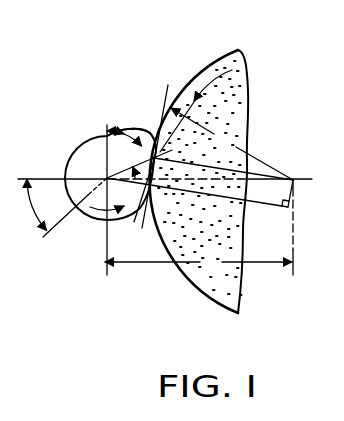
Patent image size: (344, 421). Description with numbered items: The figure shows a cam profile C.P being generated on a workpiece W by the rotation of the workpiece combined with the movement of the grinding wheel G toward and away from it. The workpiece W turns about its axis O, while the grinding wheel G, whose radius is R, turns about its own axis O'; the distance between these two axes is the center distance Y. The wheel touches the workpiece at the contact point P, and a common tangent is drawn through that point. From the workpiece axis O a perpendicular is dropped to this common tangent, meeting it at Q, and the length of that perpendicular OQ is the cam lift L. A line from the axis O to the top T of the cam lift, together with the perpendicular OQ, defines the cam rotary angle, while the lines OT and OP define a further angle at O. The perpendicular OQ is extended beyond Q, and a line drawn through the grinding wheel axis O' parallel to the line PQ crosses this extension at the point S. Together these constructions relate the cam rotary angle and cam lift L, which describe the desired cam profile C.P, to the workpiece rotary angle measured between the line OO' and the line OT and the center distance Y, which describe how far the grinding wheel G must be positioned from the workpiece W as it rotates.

The grinding wheel G is at (239, 58).
The workpiece W is at (79, 150).
The cam profile C.P is at (113, 131).
The axis of the workpiece O is at (165, 200).
The axis of the grinding wheel O' is at (301, 216).
The contact point P is at (200, 139).
The top of the cam lift T is at (157, 146).
The radius of the grinding wheel R is at (232, 144).
The cam lift L is at (107, 198).
The foot of the perpendicular from axis O to the common tangent Q is at (157, 190).
The crossing point S is at (280, 218).
The distance between the axes of workpiece and grinding wheel Y is at (198, 263).